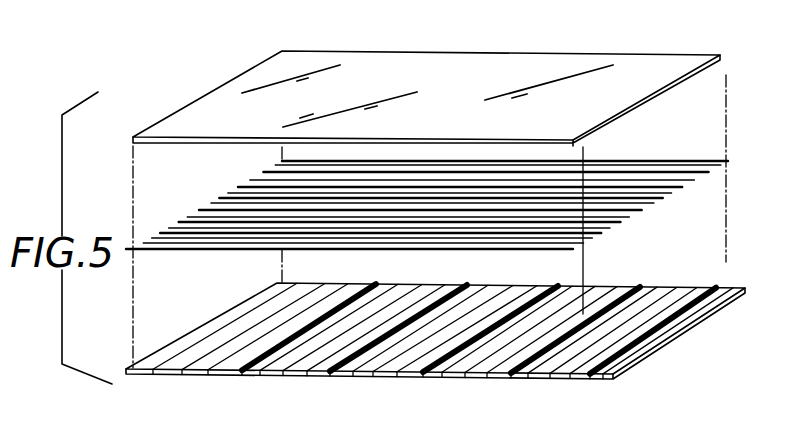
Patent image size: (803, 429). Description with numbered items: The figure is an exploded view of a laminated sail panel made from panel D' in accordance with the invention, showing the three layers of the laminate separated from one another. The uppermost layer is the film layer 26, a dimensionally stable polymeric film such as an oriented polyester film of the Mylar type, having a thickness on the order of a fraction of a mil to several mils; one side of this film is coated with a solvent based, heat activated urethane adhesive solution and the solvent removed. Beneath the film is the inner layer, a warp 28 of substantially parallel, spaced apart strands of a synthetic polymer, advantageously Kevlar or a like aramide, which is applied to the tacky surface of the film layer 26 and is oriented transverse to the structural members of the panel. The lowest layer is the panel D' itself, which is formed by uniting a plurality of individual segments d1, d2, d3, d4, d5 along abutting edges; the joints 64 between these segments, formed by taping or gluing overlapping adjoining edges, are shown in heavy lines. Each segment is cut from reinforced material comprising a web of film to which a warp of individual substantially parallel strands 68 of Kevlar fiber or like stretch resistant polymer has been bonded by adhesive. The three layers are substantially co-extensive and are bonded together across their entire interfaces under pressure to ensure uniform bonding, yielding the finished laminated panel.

The film layer 26 is at (668, 62).
The warp 28 is at (670, 166).
The panel D' is at (448, 331).
The strands 68 is at (229, 340).
The segment d1 is at (203, 358).
The segment d2 is at (296, 356).
The segment d3 is at (382, 358).
The segment d4 is at (480, 364).
The segment d5 is at (581, 363).
The joints 64 is at (260, 347).